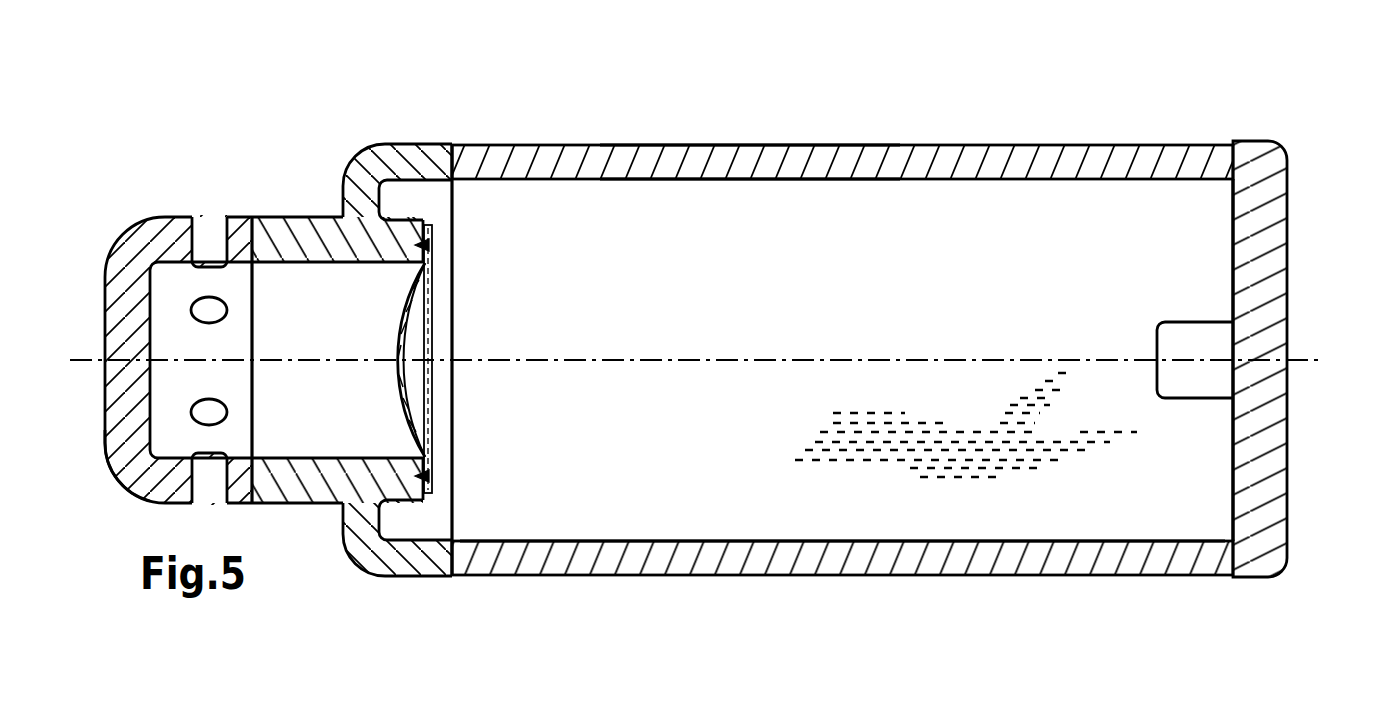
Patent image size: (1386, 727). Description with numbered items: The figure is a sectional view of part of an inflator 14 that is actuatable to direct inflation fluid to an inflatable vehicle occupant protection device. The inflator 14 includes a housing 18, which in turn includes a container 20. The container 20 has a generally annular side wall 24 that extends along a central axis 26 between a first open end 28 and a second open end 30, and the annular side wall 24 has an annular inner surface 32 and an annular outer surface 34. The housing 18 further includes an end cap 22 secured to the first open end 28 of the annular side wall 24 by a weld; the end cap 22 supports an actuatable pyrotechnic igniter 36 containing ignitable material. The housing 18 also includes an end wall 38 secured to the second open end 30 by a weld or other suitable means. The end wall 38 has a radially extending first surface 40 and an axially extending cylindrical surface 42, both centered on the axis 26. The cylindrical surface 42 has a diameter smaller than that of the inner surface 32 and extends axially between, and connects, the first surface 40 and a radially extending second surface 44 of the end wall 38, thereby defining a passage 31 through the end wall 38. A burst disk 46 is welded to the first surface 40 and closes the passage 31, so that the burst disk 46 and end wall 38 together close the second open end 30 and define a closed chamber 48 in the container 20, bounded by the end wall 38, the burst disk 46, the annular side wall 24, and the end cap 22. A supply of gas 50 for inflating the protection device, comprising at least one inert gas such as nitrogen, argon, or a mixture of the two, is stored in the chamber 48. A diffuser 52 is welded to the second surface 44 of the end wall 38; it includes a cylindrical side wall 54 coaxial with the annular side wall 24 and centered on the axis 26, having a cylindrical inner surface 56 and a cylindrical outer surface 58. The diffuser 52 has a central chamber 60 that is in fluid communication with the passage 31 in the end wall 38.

The inflator 14 is at (917, 105).
The housing 18 is at (1180, 117).
The container 20 is at (942, 138).
The end cap 22 is at (1282, 474).
The annular side wall 24 is at (655, 160).
The central axis 26 is at (1287, 360).
The first open end 28 is at (1233, 255).
The second open end 30 is at (452, 507).
The passage 31 is at (367, 322).
The annular inner surface 32 is at (798, 180).
The annular outer surface 34 is at (773, 146).
The pyrotechnic igniter 36 is at (1209, 340).
The end wall 38 is at (410, 158).
The first surface 40 is at (433, 232).
The cylindrical surface 42 is at (332, 457).
The second surface 44 is at (262, 478).
The burst disk 46 is at (407, 395).
The chamber 48 is at (678, 463).
The supply of gas 50 is at (885, 432).
The diffuser 52 is at (100, 270).
The cylindrical side wall 54 is at (153, 497).
The cylindrical inner surface 56 is at (110, 452).
The cylindrical outer surface 58 is at (235, 215).
The central chamber 60 is at (180, 328).